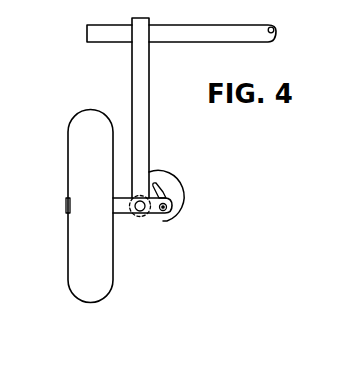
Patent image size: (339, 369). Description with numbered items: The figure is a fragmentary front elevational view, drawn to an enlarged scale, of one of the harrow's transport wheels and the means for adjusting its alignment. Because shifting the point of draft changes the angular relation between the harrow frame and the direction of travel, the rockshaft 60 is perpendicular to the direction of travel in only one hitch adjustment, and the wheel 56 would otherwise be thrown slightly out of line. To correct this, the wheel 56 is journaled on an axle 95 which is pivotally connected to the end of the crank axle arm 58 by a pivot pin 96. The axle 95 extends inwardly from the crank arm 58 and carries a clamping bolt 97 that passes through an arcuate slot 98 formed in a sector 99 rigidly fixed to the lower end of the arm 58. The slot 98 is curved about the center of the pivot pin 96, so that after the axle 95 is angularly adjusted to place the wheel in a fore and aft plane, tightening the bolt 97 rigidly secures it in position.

The wheel 56 is at (103, 272).
The crank axle arm 58 is at (142, 95).
The rockshaft 60 is at (188, 30).
The axle 95 is at (117, 213).
The pivot pin 96 is at (140, 212).
The clamping bolt 97 is at (167, 207).
The arcuate slot 98 is at (161, 188).
The sector 99 is at (151, 176).